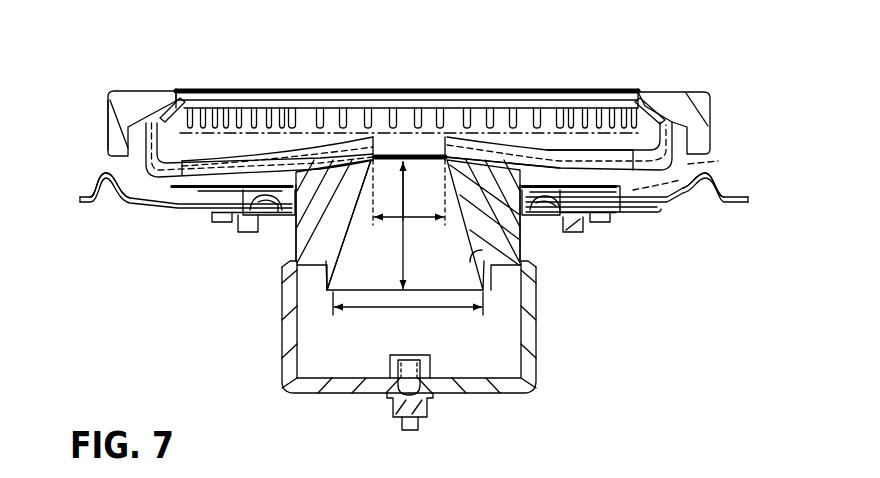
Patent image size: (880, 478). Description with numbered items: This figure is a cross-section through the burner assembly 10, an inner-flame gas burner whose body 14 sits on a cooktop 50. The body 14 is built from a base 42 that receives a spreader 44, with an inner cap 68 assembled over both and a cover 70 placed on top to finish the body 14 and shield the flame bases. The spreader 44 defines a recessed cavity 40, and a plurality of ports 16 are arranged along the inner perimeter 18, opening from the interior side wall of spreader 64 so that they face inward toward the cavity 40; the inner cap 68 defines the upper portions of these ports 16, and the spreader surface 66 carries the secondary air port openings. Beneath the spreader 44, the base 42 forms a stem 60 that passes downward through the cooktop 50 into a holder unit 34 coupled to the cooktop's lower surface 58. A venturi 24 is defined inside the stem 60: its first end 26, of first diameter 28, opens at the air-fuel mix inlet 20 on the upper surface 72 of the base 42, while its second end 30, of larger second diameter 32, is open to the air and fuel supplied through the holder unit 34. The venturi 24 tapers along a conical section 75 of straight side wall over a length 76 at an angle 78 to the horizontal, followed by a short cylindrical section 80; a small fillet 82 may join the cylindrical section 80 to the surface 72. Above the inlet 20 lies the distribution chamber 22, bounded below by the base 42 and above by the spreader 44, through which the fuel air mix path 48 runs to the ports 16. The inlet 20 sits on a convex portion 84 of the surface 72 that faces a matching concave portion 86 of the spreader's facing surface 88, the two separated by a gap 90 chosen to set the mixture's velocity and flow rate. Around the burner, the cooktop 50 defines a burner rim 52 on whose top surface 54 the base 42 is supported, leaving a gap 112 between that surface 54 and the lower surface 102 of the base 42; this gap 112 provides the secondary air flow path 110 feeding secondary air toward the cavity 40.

The burner assembly 10 is at (110, 257).
The body 14 is at (72, 140).
The ports 16 is at (260, 117).
The perimeter 18 is at (597, 110).
The air-fuel mix inlet 20 is at (387, 150).
The distribution chamber 22 is at (588, 205).
The venturi 24 is at (380, 265).
The first end 26 is at (427, 165).
The first diameter 28 is at (407, 222).
The second end 30 is at (368, 297).
The second diameter 32 is at (430, 310).
The holder unit 34 is at (332, 388).
The cavity 40 is at (545, 107).
The base 42 is at (722, 183).
The spreader 44 is at (700, 147).
The fuel air mix path 48 is at (170, 97).
The cooktop 50 is at (90, 200).
The burner rim 52 is at (103, 175).
The top surface 54 is at (718, 188).
The lower surface 58 is at (172, 186).
The stem 60 is at (255, 178).
The interior side wall of spreader 64 is at (523, 123).
The surface 66 is at (283, 157).
The inner cap 68 is at (655, 138).
The cover 70 is at (130, 105).
The upper surface 72 is at (230, 163).
The conical section 75 is at (364, 250).
The length 76 is at (404, 258).
The angle 78 is at (480, 262).
The cylindrical section 80 is at (530, 245).
The fillet 82 is at (432, 147).
The convex portion 84 is at (280, 190).
The concave portion 86 is at (212, 180).
The facing surface 88 is at (340, 157).
The gap 90 is at (407, 147).
The lower surface 102 is at (232, 181).
The secondary air flow path 110 is at (670, 200).
The gap 112 is at (112, 163).